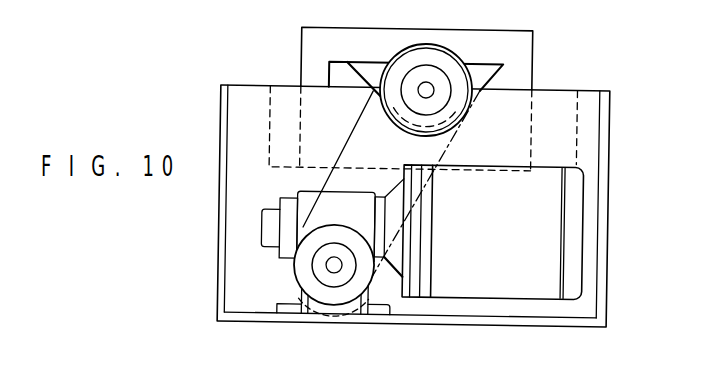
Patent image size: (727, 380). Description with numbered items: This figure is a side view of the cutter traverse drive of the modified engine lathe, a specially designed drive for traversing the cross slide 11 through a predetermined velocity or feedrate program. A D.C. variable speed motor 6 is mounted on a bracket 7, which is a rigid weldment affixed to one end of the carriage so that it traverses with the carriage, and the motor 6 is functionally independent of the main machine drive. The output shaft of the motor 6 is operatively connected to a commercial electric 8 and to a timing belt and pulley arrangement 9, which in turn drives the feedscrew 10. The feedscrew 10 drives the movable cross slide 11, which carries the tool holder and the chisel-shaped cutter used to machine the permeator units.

The D.C. variable speed motor 6 is at (506, 292).
The bracket 7 is at (579, 319).
The commercial electric 8 is at (330, 296).
The timing belt and pulley arrangement 9 is at (361, 116).
The feedscrew 10 is at (424, 90).
The cross slide 11 is at (516, 59).